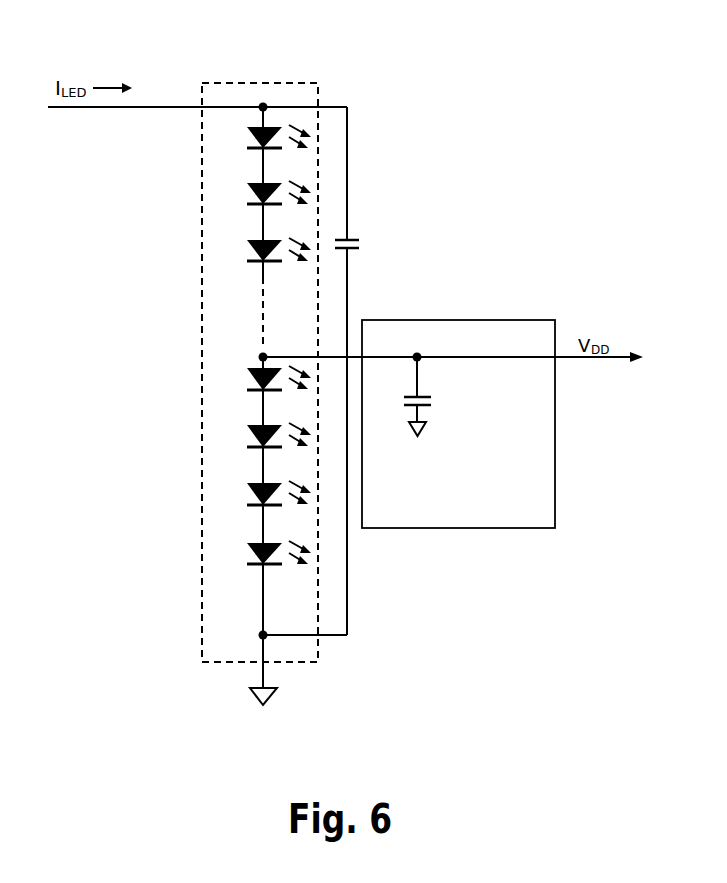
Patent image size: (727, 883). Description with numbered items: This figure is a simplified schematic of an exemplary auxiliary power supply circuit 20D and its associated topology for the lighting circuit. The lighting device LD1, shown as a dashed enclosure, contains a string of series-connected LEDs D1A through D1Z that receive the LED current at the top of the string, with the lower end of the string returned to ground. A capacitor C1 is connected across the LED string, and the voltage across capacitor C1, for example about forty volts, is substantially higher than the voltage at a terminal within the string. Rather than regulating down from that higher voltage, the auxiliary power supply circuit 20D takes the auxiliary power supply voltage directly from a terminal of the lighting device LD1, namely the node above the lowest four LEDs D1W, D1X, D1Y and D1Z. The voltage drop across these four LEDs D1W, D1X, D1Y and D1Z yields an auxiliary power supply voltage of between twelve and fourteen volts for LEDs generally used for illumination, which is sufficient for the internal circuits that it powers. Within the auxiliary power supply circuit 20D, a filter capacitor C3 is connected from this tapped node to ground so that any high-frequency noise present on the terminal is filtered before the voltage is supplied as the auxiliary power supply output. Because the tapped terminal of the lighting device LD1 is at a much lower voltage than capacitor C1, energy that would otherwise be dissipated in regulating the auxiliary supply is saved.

The lighting device LD1 is at (260, 394).
The LED D1A is at (264, 193).
The LED D1W is at (264, 393).
The LED D1X is at (264, 450).
The LED D1Y is at (264, 511).
The LED D1Z is at (264, 569).
The capacitor C1 is at (326, 371).
The filter capacitor C3 is at (437, 395).
The auxiliary power supply circuit 20D is at (482, 519).